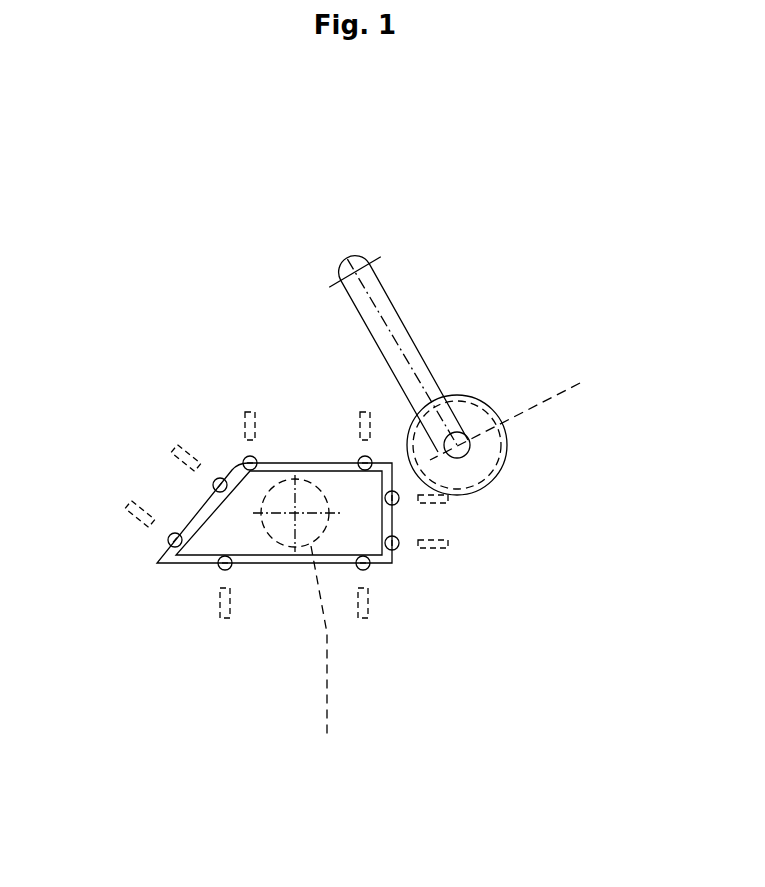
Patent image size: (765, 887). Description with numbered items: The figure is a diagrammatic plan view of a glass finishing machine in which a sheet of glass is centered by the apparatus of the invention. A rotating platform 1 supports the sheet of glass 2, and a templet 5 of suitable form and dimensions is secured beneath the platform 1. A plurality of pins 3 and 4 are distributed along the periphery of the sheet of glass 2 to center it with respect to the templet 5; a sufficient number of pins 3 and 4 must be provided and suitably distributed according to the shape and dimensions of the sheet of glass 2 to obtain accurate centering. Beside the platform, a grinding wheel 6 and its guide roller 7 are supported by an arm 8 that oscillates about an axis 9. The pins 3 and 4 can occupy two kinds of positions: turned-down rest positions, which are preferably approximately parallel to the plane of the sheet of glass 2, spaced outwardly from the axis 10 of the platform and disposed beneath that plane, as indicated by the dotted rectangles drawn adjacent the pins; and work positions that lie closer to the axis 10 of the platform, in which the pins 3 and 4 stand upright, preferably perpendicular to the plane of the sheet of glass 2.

The rotating platform 1 is at (322, 656).
The sheet of glass 2 is at (403, 539).
The pins 3 is at (203, 415).
The pins 4 is at (395, 628).
The templet 5 is at (236, 614).
The grinding wheel 6 is at (483, 397).
The guide roller 7 is at (514, 416).
The arm 8 is at (429, 342).
The axis 9 is at (403, 225).
The axis of the platform 10 is at (290, 620).